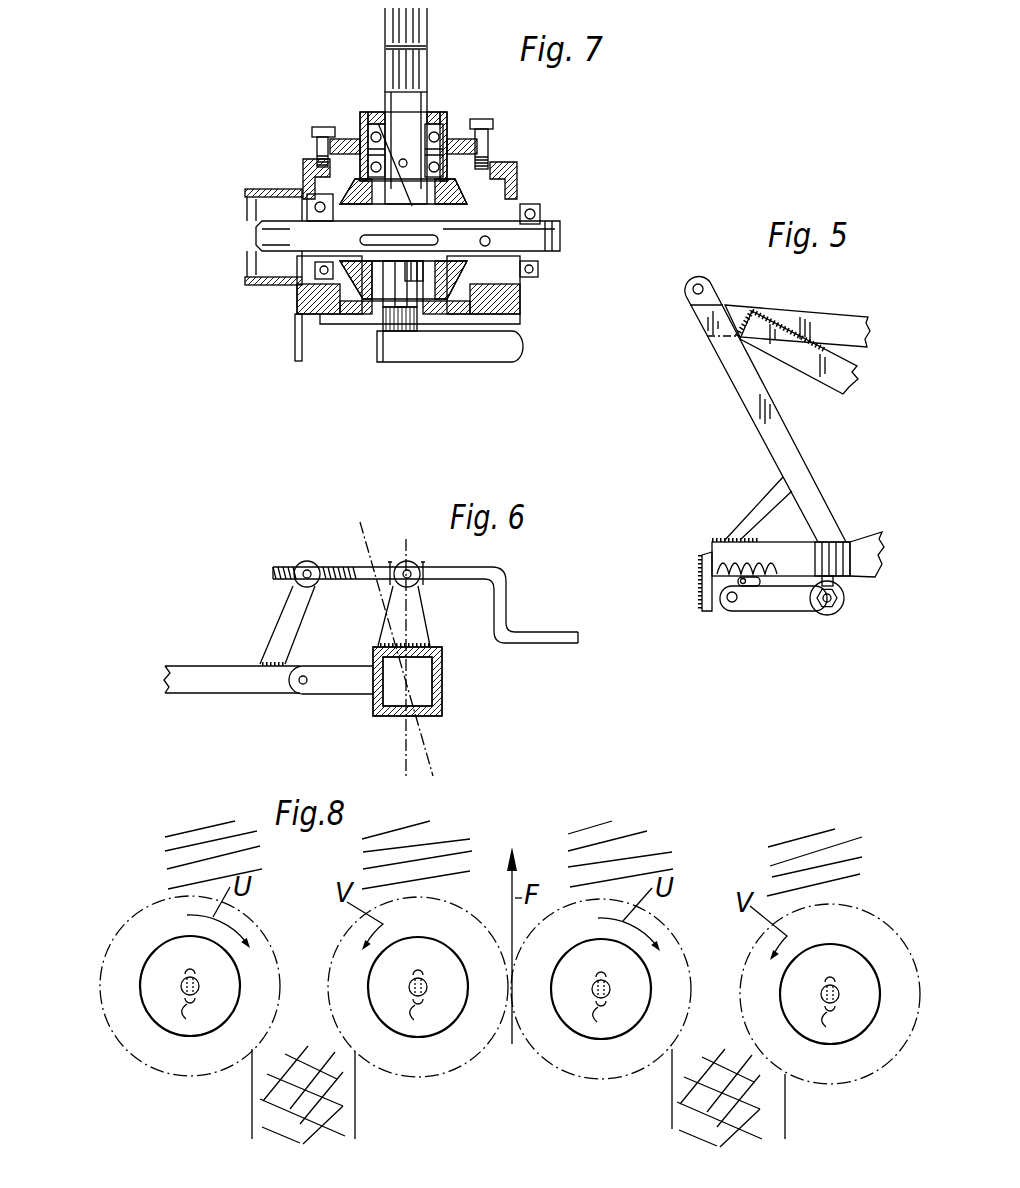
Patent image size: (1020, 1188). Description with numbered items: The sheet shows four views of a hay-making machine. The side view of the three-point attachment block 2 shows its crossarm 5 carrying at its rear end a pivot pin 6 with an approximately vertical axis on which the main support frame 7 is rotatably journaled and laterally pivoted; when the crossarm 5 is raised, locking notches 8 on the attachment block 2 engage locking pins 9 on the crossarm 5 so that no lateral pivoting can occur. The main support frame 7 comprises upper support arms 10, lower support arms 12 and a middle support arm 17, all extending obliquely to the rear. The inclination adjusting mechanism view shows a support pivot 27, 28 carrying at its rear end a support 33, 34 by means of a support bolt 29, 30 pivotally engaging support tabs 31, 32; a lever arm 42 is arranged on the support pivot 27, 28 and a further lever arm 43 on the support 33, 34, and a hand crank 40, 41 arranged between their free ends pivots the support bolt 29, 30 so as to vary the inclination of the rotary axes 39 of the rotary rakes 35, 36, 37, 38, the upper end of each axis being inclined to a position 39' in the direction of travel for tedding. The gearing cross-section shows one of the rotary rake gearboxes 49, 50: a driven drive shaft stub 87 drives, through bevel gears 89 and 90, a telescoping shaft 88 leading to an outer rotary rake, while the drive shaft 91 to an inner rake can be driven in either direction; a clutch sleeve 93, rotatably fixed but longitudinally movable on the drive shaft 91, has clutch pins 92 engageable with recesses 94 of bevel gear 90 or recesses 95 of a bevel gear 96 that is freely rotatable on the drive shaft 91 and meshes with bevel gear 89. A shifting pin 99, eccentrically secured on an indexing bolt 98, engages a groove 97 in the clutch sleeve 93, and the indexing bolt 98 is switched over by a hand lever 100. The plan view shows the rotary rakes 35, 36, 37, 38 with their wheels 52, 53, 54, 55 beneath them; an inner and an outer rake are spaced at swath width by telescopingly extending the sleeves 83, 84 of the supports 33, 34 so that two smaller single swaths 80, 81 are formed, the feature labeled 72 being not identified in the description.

In FIG. 5, the three-point attachment trestle 2 is at (774, 573).
In FIG. 5, the crossarm 5 is at (790, 600).
In FIG. 5, the pivot pin 6 is at (840, 540).
In FIG. 5, the main support frame 7 is at (728, 432).
In FIG. 5, the locking notches 8 is at (747, 580).
In FIG. 5, the locking pins 9 is at (752, 590).
In FIG. 5, the upper support arm 10 is at (835, 378).
In FIG. 5, the lower support arm 12 is at (862, 558).
In FIG. 5, the middle support arm 17 is at (822, 323).
In FIG. 6, the support pivot 27 is at (232, 702).
In FIG. 6, the support pivot 28 is at (207, 687).
In FIG. 6, the support bolt 29 is at (298, 710).
In FIG. 6, the support bolt 30 is at (302, 687).
In FIG. 6, the support tab 31 is at (339, 705).
In FIG. 6, the support tab 32 is at (343, 687).
In FIG. 6, the support 33 is at (453, 681).
In FIG. 6, the support 34 is at (446, 685).
In FIG. 8, the outer rotary rake 35 is at (252, 925).
In FIG. 8, the inner rotary rake 36 is at (458, 917).
In FIG. 8, the inner rotary rake 37 is at (668, 933).
In FIG. 8, the outer rotary rake 38 is at (848, 922).
In FIG. 6, the rotary axis 39 is at (393, 637).
In FIG. 6, the inclined position of rotary axis 39' is at (372, 647).
In FIG. 6, the hand crank 40 is at (433, 602).
In FIG. 6, the hand crank 41 is at (542, 635).
In FIG. 6, the lever arm 42 is at (292, 618).
In FIG. 6, the lever arm 43 is at (418, 618).
In FIG. 7, the rotary rake gearbox 49 is at (460, 191).
In FIG. 7, the rotary rake gearbox 50 is at (526, 141).
In FIG. 8, the wheel 52 is at (195, 1002).
In FIG. 8, the wheel 53 is at (419, 1003).
In FIG. 8, the wheel 54 is at (599, 1004).
In FIG. 8, the wheel 55 is at (830, 1009).
In FIG. 8, the crop material 72 is at (452, 827).
In FIG. 8, the single swath 80 is at (338, 1087).
In FIG. 8, the single swath 81 is at (687, 1095).
In FIG. 6, the sleeve 83 is at (454, 697).
In FIG. 6, the sleeve 84 is at (438, 708).
In FIG. 7, the drive shaft stub 87 is at (417, 106).
In FIG. 7, the telescoping shaft 88 is at (560, 245).
In FIG. 7, the bevel gear 89 is at (496, 133).
In FIG. 7, the bevel gear 90 is at (513, 180).
In FIG. 7, the drive shaft 91 is at (253, 247).
In FIG. 7, the clutch pins 92 is at (373, 275).
In FIG. 7, the clutch sleeve 93 is at (390, 288).
In FIG. 7, the recesses 94 is at (513, 290).
In FIG. 7, the recesses 95 is at (343, 267).
In FIG. 7, the bevel gear 96 is at (323, 177).
In FIG. 7, the groove 97 is at (373, 133).
In FIG. 7, the indexing bolt 98 is at (398, 303).
In FIG. 7, the shifting pin 99 is at (418, 277).
In FIG. 7, the hand lever 100 is at (523, 348).